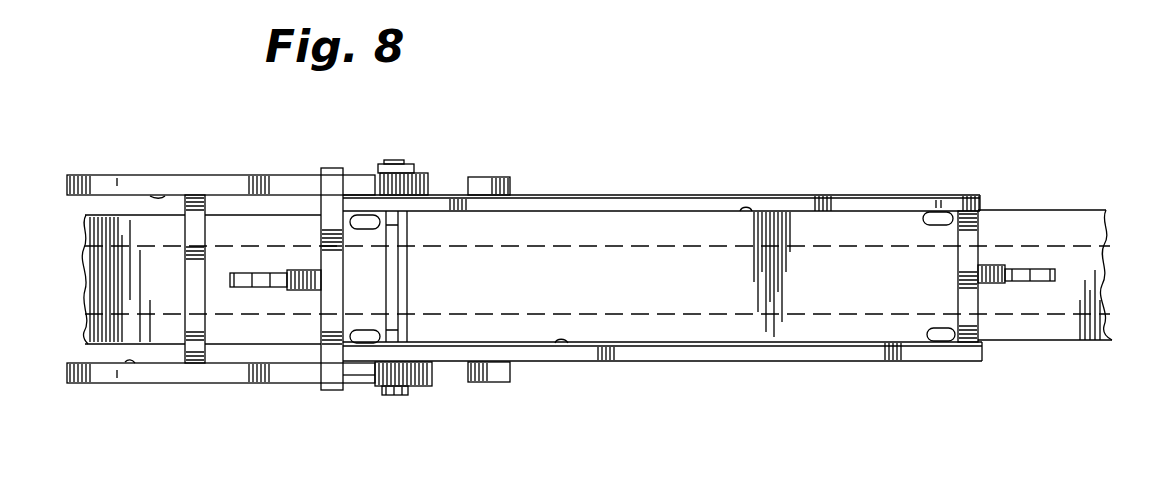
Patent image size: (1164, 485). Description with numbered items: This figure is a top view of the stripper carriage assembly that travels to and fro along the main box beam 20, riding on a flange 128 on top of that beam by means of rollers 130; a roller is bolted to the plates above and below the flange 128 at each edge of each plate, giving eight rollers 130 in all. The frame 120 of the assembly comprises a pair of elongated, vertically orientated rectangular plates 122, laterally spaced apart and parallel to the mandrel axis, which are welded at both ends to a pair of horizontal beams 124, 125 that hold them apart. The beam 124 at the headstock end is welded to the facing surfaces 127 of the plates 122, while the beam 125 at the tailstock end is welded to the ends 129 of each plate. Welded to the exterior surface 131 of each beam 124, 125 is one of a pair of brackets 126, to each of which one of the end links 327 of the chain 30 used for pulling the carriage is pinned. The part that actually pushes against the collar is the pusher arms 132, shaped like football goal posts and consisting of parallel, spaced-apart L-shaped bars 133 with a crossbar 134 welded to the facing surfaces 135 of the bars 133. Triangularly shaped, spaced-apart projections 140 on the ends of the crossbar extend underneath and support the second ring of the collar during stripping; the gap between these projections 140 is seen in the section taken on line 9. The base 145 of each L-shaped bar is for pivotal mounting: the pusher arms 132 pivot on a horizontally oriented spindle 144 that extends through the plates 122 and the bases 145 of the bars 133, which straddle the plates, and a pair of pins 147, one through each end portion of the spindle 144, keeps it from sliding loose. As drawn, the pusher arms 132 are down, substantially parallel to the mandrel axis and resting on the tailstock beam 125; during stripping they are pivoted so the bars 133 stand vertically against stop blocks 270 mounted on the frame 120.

The section line 9- 9 is at (180, 172).
The main box beam 20 is at (610, 253).
The chain 30 is at (233, 290).
The frame 120 is at (547, 195).
The rectangular plates 122 is at (886, 196).
The horizontal beam 124 is at (972, 223).
The horizontal beam 125 is at (372, 214).
The brackets 126 is at (297, 288).
The facing surfaces 127 is at (753, 212).
The flange 128 is at (1077, 215).
The ends 129 is at (338, 202).
The rollers 130 is at (384, 222).
The exterior surface 131 is at (299, 384).
The pusher arms 132 is at (238, 386).
The L-shaped bars 133 is at (293, 157).
The crossbar 134 is at (187, 265).
The facing surfaces 135 is at (157, 197).
The triangularly shaped projections 140 is at (190, 223).
The spindle 144 is at (401, 227).
The base 145 is at (356, 380).
The pins 147 is at (412, 388).
The stop blocks 270 is at (507, 177).
The end links 327 is at (287, 240).